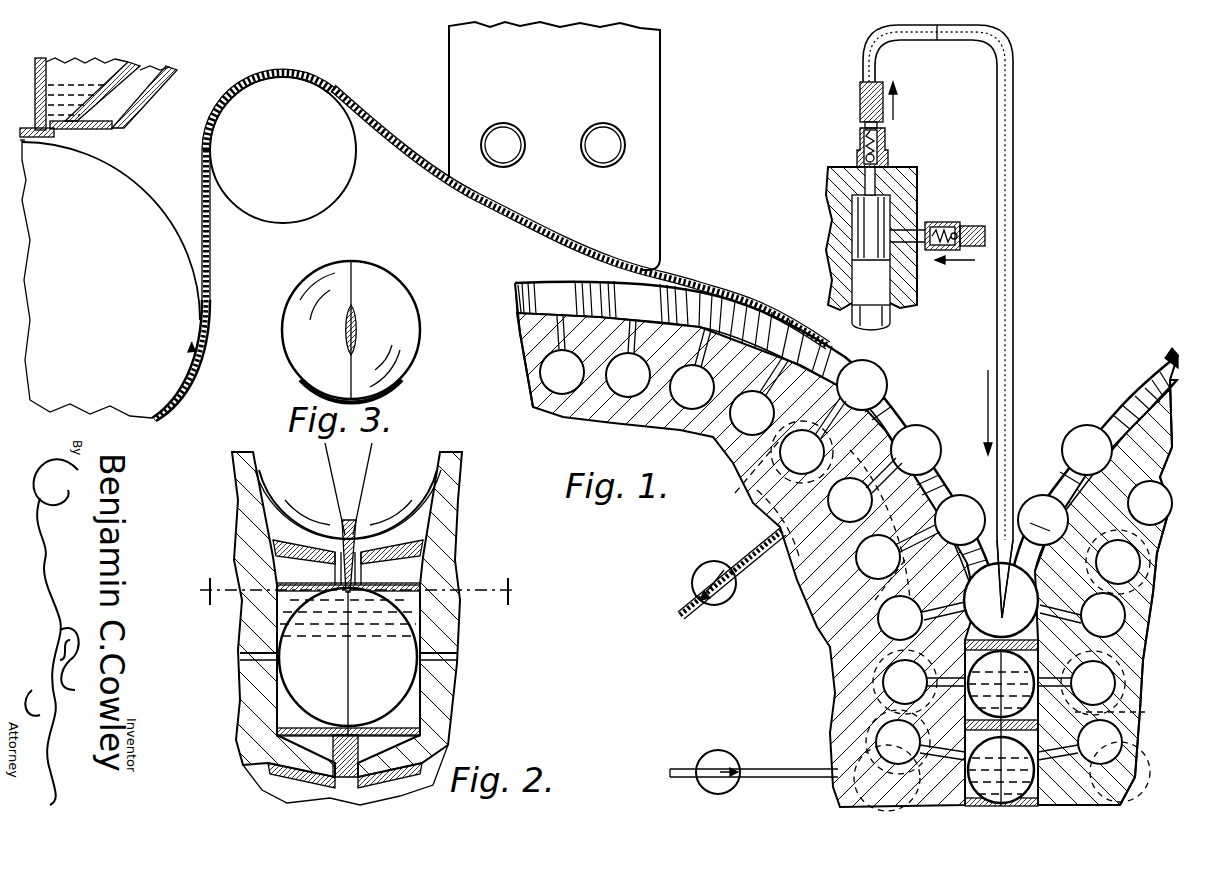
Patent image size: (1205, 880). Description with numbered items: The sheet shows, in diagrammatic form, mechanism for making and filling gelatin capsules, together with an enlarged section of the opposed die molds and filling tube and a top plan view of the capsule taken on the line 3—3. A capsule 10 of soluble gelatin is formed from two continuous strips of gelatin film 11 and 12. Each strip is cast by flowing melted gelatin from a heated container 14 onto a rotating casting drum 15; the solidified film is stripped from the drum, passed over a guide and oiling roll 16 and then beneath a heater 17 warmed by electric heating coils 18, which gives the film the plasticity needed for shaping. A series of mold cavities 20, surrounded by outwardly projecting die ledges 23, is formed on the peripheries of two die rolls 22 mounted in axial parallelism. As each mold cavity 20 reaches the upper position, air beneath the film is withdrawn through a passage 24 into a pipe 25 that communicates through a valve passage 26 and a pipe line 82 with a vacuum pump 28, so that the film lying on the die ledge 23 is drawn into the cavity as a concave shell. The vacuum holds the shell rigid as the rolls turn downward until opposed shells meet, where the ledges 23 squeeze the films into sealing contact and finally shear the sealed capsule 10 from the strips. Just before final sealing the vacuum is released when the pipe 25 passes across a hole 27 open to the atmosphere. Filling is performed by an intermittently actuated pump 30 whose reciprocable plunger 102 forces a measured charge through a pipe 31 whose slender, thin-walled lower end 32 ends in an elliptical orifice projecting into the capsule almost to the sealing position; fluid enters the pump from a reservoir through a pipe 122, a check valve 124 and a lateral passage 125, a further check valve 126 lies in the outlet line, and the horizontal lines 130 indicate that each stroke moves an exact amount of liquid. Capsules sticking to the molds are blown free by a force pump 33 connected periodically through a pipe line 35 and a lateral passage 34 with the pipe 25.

In FIG. 2, the section line 3 is at (360, 584).
In FIG. 1, the capsule 10 is at (956, 584).
In FIG. 2, the capsule 10 is at (348, 602).
In FIG. 3, the capsule 10 is at (351, 332).
In FIG. 1, the gelatin film strip 11 is at (683, 283).
In FIG. 1, the gelatin film strip 12 is at (1165, 357).
In FIG. 1, the heated container 14 is at (166, 70).
In FIG. 1, the rotating casting drum 15 is at (110, 279).
In FIG. 1, the guide and oiling roll 16 is at (283, 150).
In FIG. 1, the heater 17 is at (655, 98).
In FIG. 1, the electric heating coils 18 is at (595, 140).
In FIG. 1, the mold cavity 20 is at (846, 543).
In FIG. 2, the mold cavity 20 is at (462, 522).
In FIG. 1, the die roll 22 is at (530, 376).
In FIG. 1, the die ledge 23 is at (520, 288).
In FIG. 2, the die ledge 23 is at (395, 565).
In FIG. 1, the passage 24 is at (830, 425).
In FIG. 1, the pipe 25 is at (856, 540).
In FIG. 1, the valve passage 26 is at (759, 500).
In FIG. 1, the hole 27 is at (1008, 612).
In FIG. 1, the vacuum pump 28 is at (700, 566).
In FIG. 1, the intermittently actuated pump 30 is at (830, 222).
In FIG. 1, the filling pipe 31 is at (996, 492).
In FIG. 1, the pipe end 32 is at (1018, 598).
In FIG. 2, the pipe end 32 is at (352, 520).
In FIG. 3, the pipe end 32 is at (346, 328).
In FIG. 1, the force pump 33 is at (732, 754).
In FIG. 1, the lateral passage 34 is at (860, 795).
In FIG. 1, the pipe line 35 is at (792, 767).
In FIG. 1, the pipe line 82 is at (750, 566).
In FIG. 1, the reciprocable plunger 102 is at (892, 318).
In FIG. 1, the pipe 122 is at (972, 228).
In FIG. 1, the check valve 124 is at (950, 222).
In FIG. 1, the lateral passage 125 is at (905, 245).
In FIG. 1, the check valve 126 is at (857, 155).
In FIG. 1, the horizontal lines 130 is at (1013, 215).